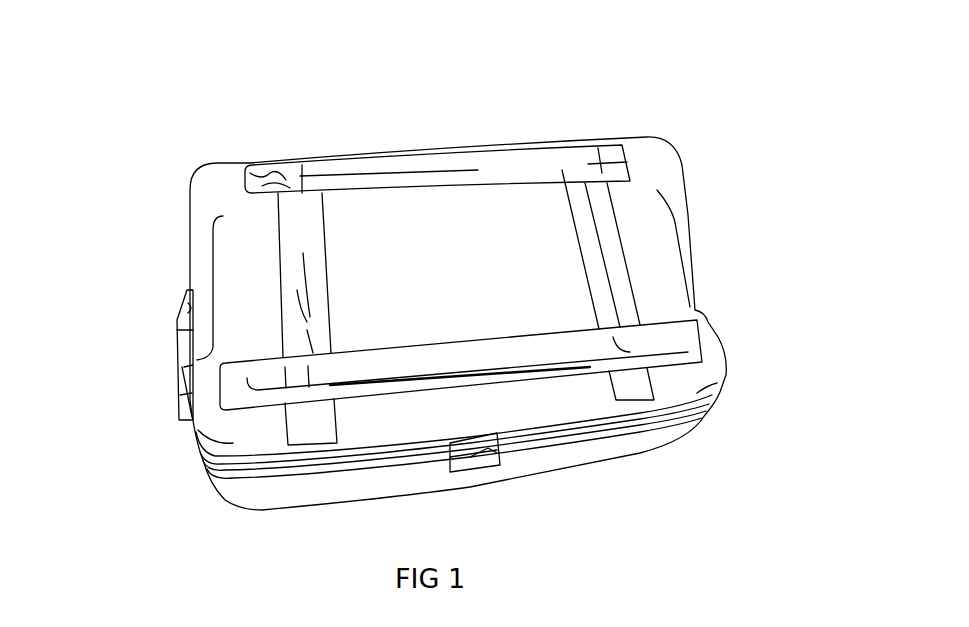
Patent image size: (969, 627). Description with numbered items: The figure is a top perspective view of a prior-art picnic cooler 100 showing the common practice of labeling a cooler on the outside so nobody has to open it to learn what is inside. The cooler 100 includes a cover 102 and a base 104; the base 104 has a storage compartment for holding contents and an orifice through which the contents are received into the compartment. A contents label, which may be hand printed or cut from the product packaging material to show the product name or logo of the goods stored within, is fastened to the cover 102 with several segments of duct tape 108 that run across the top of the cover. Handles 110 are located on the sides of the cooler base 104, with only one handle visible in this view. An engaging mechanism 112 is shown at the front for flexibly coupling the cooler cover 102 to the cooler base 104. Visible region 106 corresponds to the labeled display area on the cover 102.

The picnic cooler 100 is at (597, 100).
The cover 102 is at (692, 253).
The base 104 is at (640, 453).
The visual display 106 is at (410, 217).
The duct tape 108 is at (310, 230).
The handles 110 is at (167, 333).
The engaging mechanism 112 is at (487, 470).